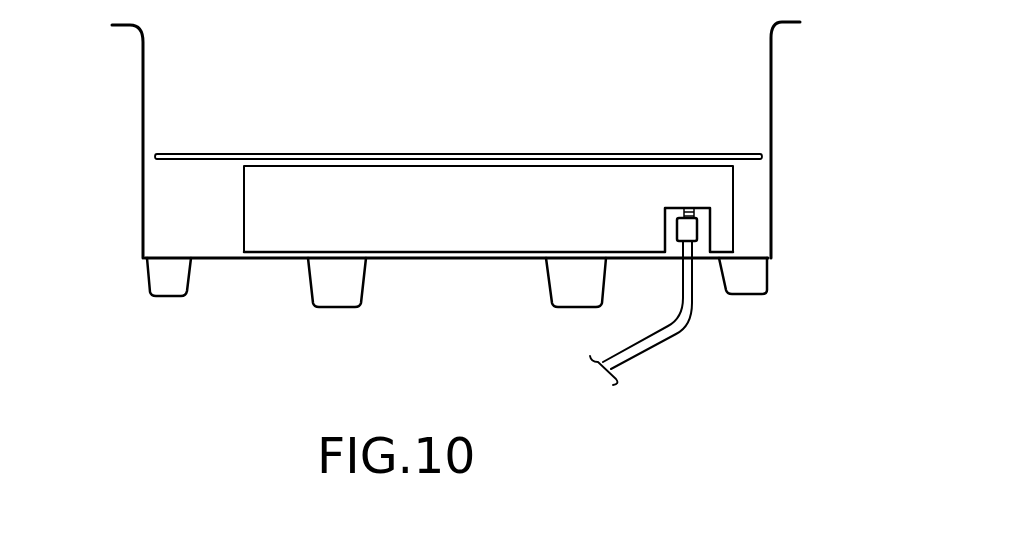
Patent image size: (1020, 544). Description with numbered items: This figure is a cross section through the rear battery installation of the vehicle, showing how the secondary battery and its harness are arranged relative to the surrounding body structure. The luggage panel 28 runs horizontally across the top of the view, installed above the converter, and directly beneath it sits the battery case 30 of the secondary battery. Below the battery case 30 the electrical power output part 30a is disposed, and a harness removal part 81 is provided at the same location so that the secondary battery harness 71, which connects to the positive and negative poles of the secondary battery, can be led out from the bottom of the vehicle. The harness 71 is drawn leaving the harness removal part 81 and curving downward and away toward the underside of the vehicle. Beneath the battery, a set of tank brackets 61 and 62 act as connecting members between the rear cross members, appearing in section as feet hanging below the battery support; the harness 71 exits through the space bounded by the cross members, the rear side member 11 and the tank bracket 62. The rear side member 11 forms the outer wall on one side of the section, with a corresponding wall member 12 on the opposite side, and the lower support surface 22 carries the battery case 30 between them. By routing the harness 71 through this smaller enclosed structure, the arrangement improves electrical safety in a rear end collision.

The rear side member 11 is at (768, 295).
The left frame / housing side wall 12 is at (147, 300).
The base plate 22 is at (211, 256).
The luggage panel 28 is at (519, 153).
The battery case 30 is at (632, 166).
The electrical power output part 30a is at (684, 209).
The tank bracket 61 is at (338, 312).
The tank bracket 62 is at (568, 312).
The secondary battery harness wire 71 is at (630, 366).
The harness removal part 81 is at (693, 251).